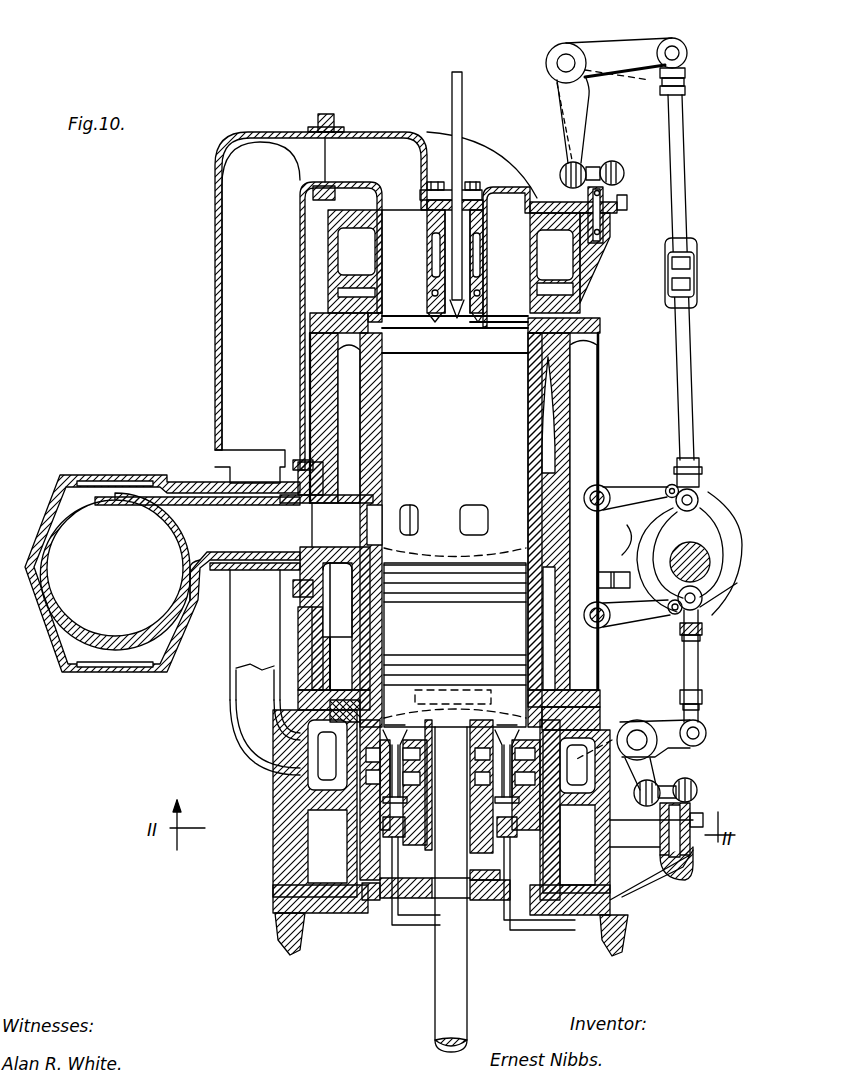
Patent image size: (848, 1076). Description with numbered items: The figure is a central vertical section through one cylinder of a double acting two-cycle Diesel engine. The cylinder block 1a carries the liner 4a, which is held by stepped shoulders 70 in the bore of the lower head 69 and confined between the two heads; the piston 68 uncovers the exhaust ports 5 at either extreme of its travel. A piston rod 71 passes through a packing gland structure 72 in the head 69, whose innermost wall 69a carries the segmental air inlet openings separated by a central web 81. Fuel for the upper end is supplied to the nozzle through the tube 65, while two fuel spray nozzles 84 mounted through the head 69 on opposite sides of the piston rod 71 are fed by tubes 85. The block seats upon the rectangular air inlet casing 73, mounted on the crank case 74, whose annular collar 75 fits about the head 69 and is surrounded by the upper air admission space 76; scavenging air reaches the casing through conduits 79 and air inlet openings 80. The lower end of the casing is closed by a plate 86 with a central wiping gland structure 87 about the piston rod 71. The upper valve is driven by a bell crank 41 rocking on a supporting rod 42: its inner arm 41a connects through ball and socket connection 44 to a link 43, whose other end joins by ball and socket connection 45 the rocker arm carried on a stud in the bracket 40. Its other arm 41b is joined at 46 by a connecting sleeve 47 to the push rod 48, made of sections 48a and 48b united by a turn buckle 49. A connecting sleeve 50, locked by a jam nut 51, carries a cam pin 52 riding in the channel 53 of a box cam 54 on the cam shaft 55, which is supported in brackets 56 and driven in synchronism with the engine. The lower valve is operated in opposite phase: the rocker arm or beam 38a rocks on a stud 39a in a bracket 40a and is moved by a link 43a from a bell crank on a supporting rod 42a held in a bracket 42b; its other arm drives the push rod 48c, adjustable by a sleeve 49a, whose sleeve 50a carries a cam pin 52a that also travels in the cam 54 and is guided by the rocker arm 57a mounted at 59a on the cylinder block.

The cylinder block 1a is at (568, 415).
The liner 4a is at (545, 457).
The exhaust ports 5 is at (465, 505).
The rocker arm or beam 38a is at (705, 821).
The stud 39a is at (693, 858).
The bracket 40 is at (598, 258).
The bracket 40a is at (640, 880).
The bell crank 41 is at (547, 88).
The inner arm of the bell crank 41a is at (564, 113).
The other arm of the bell crank 41b is at (615, 52).
The supporting rod 42 is at (557, 63).
The supporting rod 42a is at (640, 738).
The bracket 42b is at (630, 727).
The link 43 is at (597, 165).
The link 43a is at (698, 789).
The ball and socket connection 44 is at (562, 170).
The ball and socket connection 45 is at (620, 163).
The pivotal connection 46 is at (682, 45).
The connecting sleeve 47 is at (686, 76).
The push rod 48 is at (686, 212).
The push rod section 48a is at (684, 152).
The push rod section 48b is at (690, 440).
The push rod 48c is at (700, 660).
The turn buckle 49 is at (695, 256).
The sleeve 49a is at (703, 697).
The connecting sleeve 50 is at (699, 488).
The sleeve 50a is at (703, 640).
The jam nut 51 is at (700, 468).
The cam pin 52 is at (680, 492).
The cam pin 52a is at (670, 614).
The channel 53 is at (716, 590).
The box cam 54 is at (736, 528).
The cam shaft 55 is at (702, 610).
The brackets 56 is at (626, 509).
The rocker arm 57a is at (627, 613).
The pivotal mounting 59a is at (605, 556).
The tube 65 is at (451, 78).
The piston 68 is at (455, 637).
The head 69 is at (350, 770).
The innermost wall 69a is at (340, 740).
The stepped shoulders 70 is at (580, 712).
The piston rod 71 is at (434, 990).
The packing gland structure 72 is at (467, 835).
The air inlet casing 73 is at (400, 830).
The crank case 74 is at (290, 936).
The annular collar 75 is at (395, 830).
The upper air admission space 76 is at (345, 750).
The conduits 79 is at (228, 656).
The air inlet openings 80 is at (298, 745).
The central web 81 is at (360, 790).
The fuel spray nozzles 84 is at (248, 862).
The tubes 85 is at (395, 928).
The plate 86 is at (366, 902).
The wiping gland structure 87 is at (500, 900).